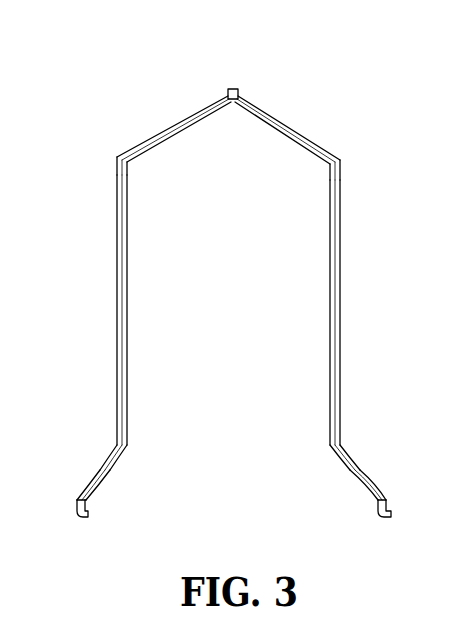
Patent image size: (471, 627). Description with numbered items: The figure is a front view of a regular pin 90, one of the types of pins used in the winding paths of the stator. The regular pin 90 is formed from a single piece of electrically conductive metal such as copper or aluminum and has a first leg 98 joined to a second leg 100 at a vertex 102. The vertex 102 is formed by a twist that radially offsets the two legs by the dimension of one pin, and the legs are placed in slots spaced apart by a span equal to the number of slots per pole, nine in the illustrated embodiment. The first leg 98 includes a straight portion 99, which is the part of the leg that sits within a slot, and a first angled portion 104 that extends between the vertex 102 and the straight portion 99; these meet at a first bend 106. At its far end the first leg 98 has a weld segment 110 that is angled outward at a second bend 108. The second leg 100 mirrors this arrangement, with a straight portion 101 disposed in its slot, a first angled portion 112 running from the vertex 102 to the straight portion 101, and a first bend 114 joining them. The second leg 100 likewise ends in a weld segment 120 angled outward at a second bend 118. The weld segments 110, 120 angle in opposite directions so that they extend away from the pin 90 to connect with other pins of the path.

The regular pin 90 is at (136, 52).
The first leg 98 is at (351, 157).
The straight portion 99 is at (338, 234).
The second leg 100 is at (122, 300).
The straight portion 101 is at (123, 355).
The vertex 102 is at (228, 89).
The first angled portion 104 is at (283, 120).
The first bend 106 is at (330, 165).
The second bend 108 is at (340, 447).
The weld segment 110 is at (368, 470).
The first angled portion 112 is at (180, 122).
The first bend 114 is at (125, 163).
The second bend 118 is at (125, 447).
The weld segment 120 is at (92, 462).